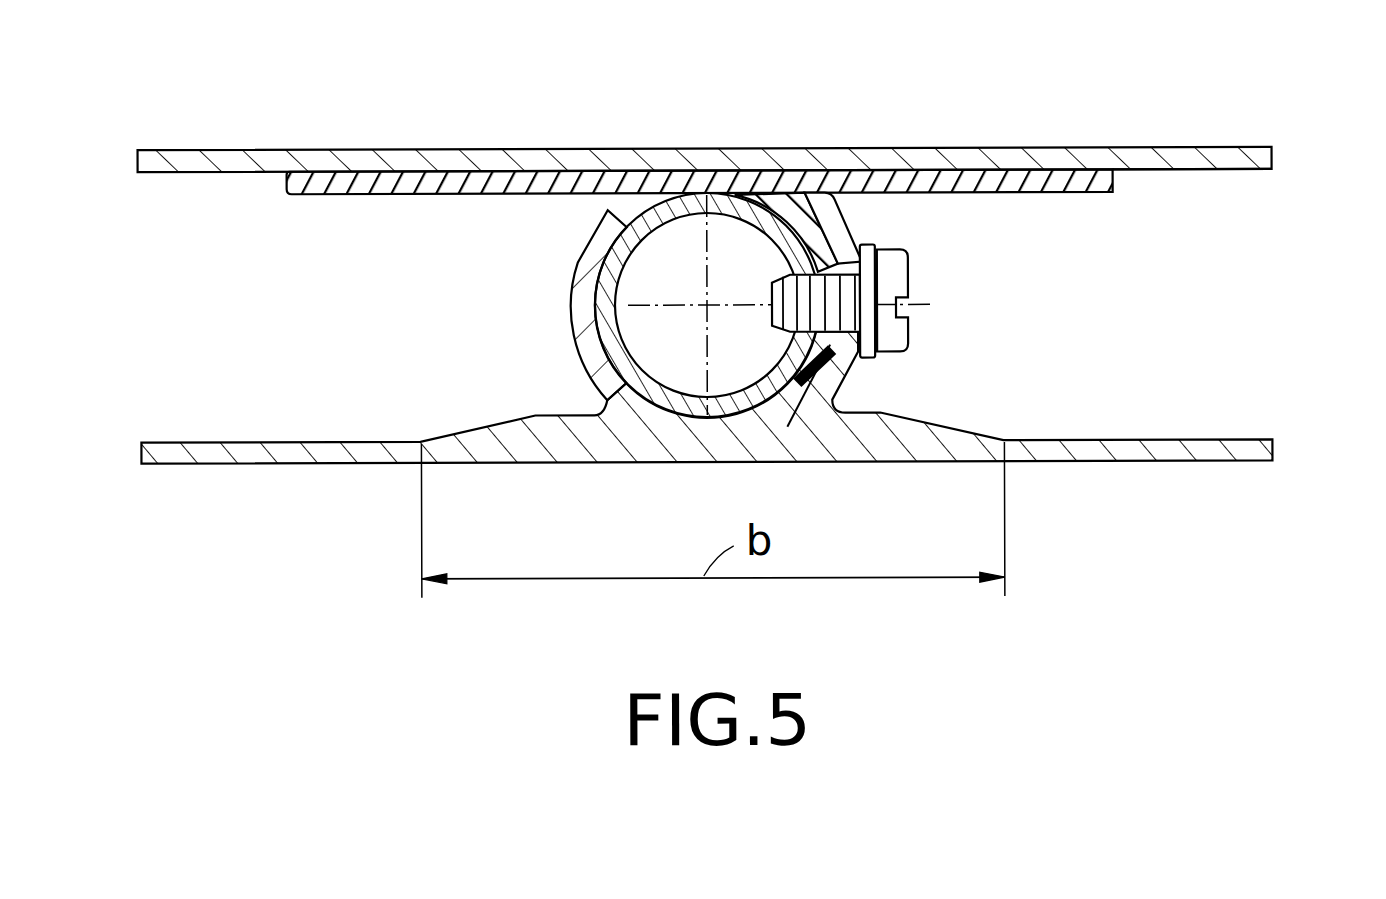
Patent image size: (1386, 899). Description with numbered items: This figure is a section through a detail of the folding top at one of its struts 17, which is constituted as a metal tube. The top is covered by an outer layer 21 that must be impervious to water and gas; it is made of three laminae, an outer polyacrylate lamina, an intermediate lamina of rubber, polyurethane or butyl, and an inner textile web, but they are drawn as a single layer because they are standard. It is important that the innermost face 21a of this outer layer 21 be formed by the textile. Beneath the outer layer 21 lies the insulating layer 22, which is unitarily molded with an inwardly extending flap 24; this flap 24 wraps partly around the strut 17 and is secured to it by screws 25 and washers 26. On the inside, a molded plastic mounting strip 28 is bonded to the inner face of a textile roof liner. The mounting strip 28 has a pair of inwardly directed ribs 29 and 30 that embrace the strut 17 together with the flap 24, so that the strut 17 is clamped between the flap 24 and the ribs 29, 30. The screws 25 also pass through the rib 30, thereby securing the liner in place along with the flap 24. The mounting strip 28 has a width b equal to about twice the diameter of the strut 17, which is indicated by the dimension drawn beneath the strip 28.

The strut 17 is at (597, 341).
The outer layer 21 is at (1193, 153).
The innermost face 21a is at (1229, 172).
The insulating layer 22 is at (1086, 194).
The flap 24 is at (835, 365).
The screw 25 is at (910, 337).
The washer 26 is at (876, 246).
The mounting strip 28 is at (562, 428).
The rib 29 is at (577, 264).
The rib 30 is at (838, 232).